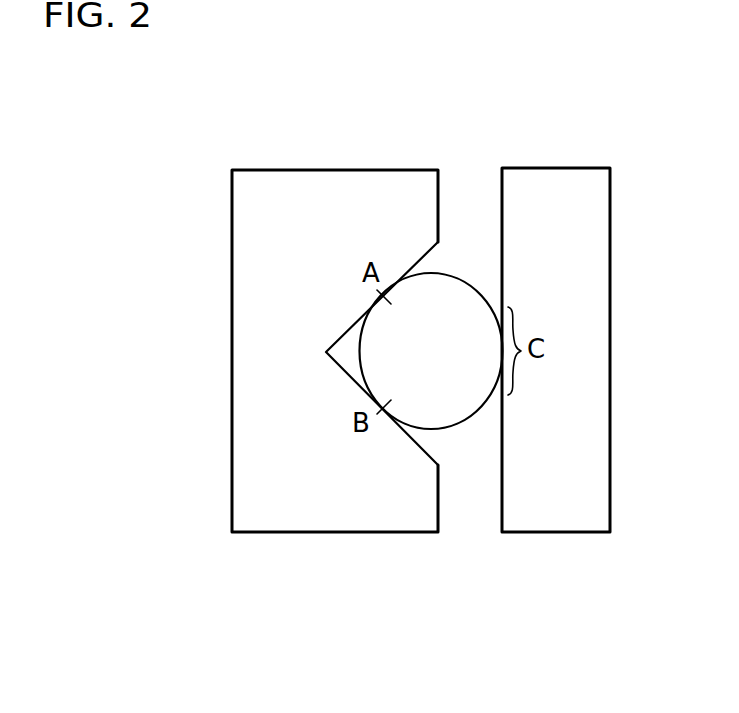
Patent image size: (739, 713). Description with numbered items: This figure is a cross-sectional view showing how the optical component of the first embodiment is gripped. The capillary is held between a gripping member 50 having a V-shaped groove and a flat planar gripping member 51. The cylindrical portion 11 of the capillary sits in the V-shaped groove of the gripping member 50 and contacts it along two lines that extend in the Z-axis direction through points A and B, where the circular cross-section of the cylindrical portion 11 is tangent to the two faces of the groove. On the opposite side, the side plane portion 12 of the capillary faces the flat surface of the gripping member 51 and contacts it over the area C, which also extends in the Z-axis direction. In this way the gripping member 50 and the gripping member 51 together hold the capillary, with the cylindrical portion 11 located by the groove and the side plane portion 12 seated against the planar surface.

The gripping member 50 is at (338, 198).
The flat planar gripping member 51 is at (567, 195).
The cylindrical portion 11 is at (464, 275).
The side plane portion 12 is at (498, 377).